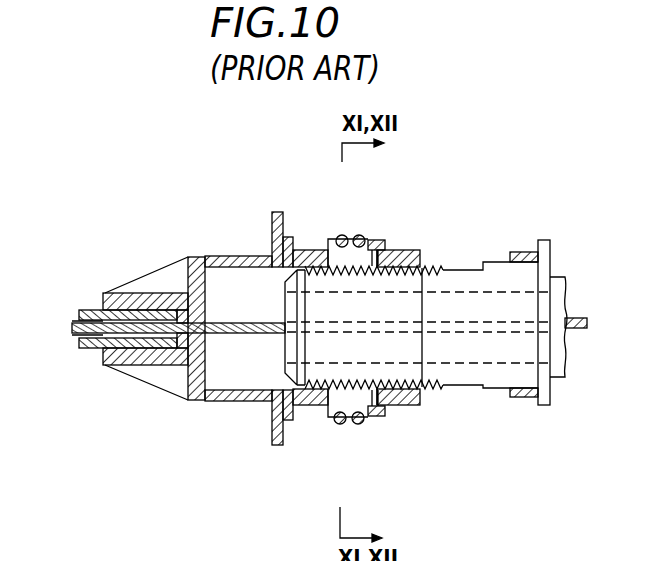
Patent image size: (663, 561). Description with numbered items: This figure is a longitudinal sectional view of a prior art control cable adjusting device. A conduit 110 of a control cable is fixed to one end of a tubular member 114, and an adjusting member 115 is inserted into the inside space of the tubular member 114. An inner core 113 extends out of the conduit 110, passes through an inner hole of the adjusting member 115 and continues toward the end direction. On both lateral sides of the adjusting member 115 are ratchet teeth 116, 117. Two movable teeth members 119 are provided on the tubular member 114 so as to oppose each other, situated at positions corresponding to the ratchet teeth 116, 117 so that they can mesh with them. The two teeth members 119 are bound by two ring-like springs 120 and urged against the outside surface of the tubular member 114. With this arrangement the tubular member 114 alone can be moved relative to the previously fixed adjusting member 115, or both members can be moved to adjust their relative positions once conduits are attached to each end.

The conduit 110 is at (84, 305).
The inner core 113 is at (240, 323).
The tubular member 114 is at (222, 256).
The adjusting member 115 is at (495, 262).
The ratchet teeth 116 is at (437, 262).
The ratchet teeth 117 is at (438, 405).
The movable teeth members 119 is at (376, 246).
The ring-like springs 120 is at (356, 236).